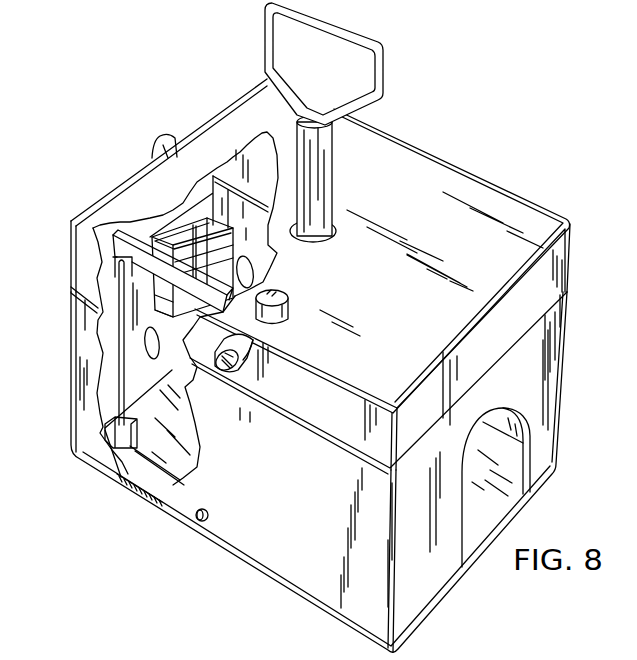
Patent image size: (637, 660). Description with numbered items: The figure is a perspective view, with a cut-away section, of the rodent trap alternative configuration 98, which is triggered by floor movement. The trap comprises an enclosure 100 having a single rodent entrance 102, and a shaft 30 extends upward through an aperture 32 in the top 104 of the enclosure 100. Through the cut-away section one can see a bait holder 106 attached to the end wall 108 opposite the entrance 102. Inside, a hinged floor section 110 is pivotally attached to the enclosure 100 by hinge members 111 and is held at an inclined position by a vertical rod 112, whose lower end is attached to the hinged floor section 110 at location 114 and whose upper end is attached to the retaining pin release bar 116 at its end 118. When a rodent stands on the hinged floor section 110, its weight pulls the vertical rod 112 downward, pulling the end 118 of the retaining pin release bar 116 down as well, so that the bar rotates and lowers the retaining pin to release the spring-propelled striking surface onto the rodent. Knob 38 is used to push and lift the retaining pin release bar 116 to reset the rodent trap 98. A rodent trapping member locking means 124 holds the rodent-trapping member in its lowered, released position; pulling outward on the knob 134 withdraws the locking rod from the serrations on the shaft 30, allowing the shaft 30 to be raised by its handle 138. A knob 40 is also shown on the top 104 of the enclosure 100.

The rodent trap alternative configuration 98 is at (327, 327).
The enclosure 100 is at (550, 340).
The single rodent entrance 102 is at (534, 503).
The top of the enclosure 104 is at (538, 220).
The bait holder 106 is at (181, 248).
The end wall 108 is at (107, 362).
The hinged floor section 110 is at (166, 458).
The hinge members 111 is at (200, 521).
The vertical rod 112 is at (117, 340).
The attachment location on hinged floor section 114 is at (112, 433).
The retaining pin release bar 116 is at (157, 271).
The end of retaining pin release bar 118 is at (112, 258).
The rodent trapping member locking means 124 is at (238, 154).
The knob 134 is at (152, 151).
The handle 138 is at (380, 62).
The shaft 30 is at (312, 229).
The aperture 32 is at (326, 236).
The knob 38 is at (227, 362).
The knob 40 is at (287, 306).